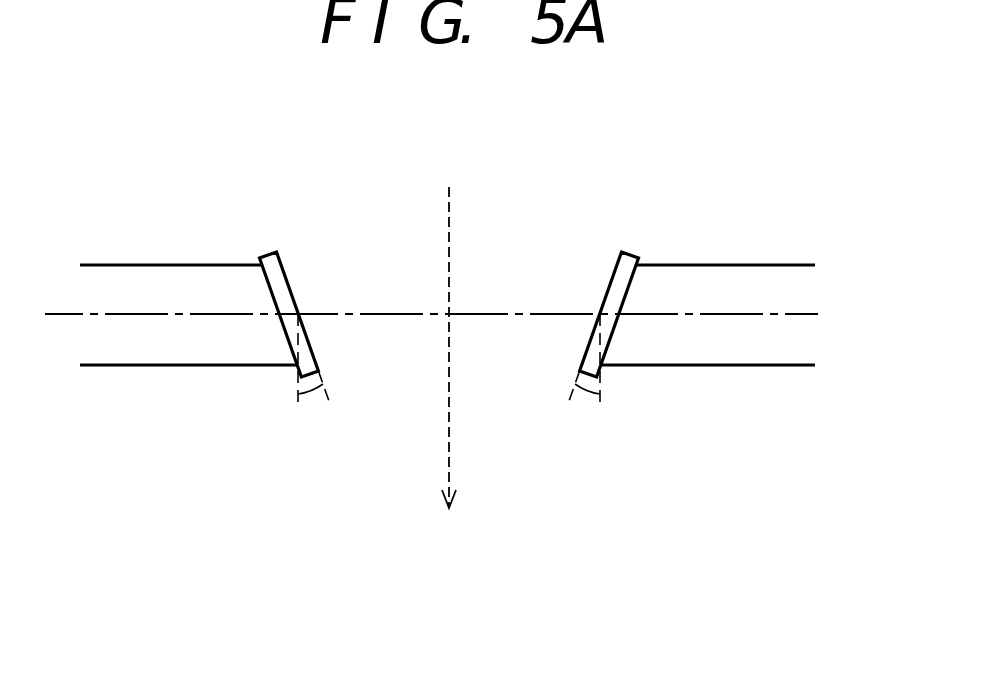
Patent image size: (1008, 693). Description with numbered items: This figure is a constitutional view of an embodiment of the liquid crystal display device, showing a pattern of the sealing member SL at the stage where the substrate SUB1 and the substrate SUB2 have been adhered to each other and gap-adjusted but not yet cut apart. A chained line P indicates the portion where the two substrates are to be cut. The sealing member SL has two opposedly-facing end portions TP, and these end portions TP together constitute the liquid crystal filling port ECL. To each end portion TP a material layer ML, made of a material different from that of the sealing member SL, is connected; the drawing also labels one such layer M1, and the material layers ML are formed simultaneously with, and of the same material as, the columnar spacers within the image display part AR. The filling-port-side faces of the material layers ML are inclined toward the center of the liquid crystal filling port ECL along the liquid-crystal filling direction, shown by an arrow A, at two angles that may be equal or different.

The chained line P is at (148, 314).
The end portions of the sealing member TP is at (245, 291).
The sealing member SL is at (140, 352).
The first mirror M1 is at (288, 272).
The material layer ML is at (597, 280).
The liquid crystal filling port ECL is at (425, 292).
The arrow A is at (452, 522).
The image display part AR is at (706, 482).